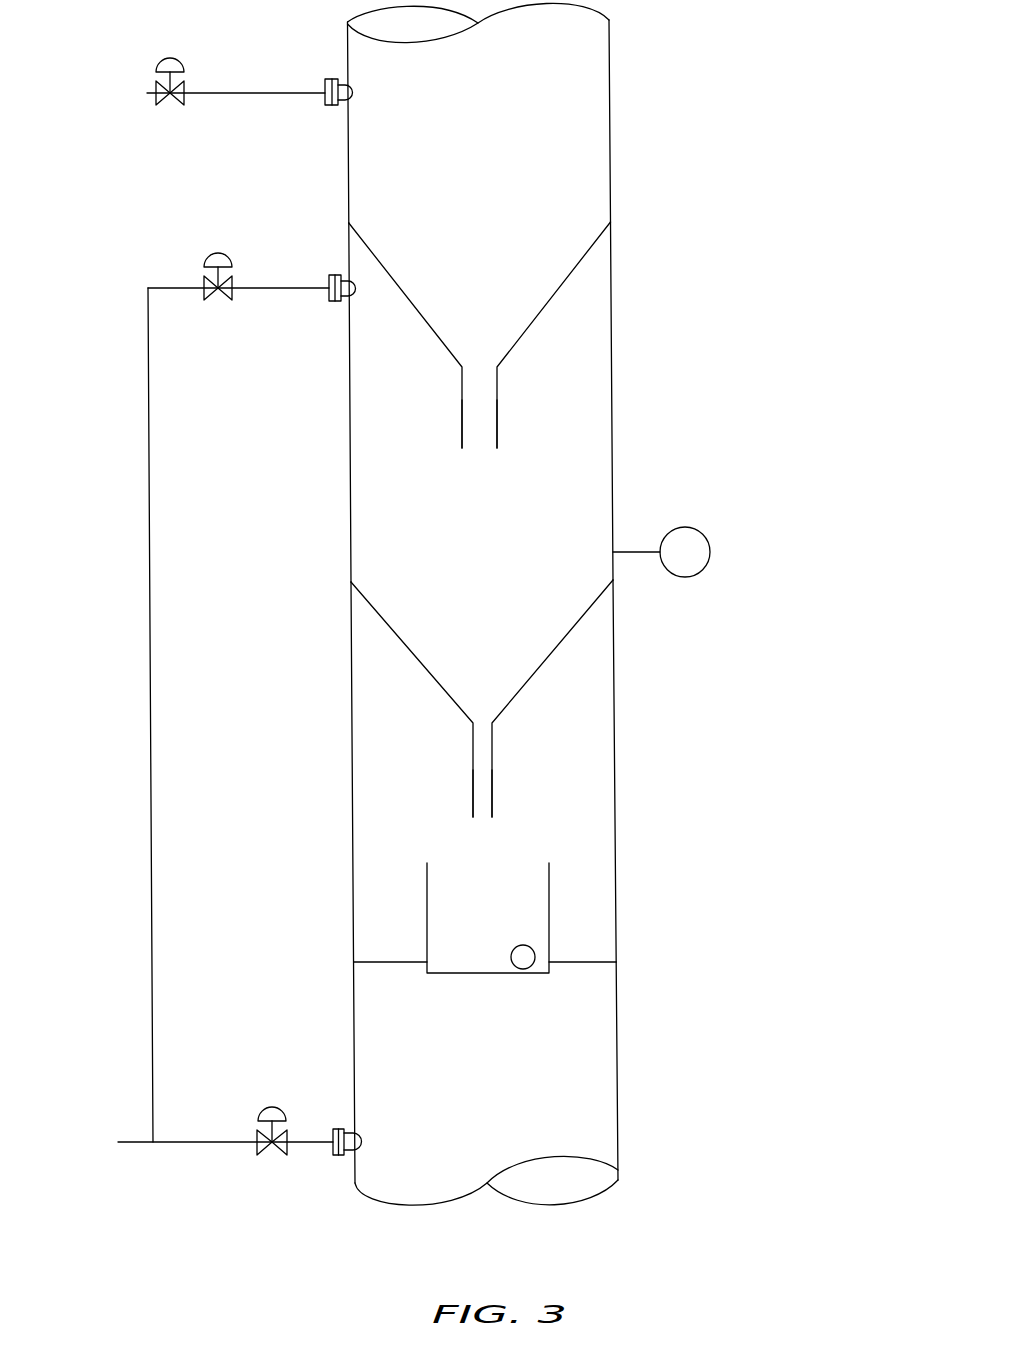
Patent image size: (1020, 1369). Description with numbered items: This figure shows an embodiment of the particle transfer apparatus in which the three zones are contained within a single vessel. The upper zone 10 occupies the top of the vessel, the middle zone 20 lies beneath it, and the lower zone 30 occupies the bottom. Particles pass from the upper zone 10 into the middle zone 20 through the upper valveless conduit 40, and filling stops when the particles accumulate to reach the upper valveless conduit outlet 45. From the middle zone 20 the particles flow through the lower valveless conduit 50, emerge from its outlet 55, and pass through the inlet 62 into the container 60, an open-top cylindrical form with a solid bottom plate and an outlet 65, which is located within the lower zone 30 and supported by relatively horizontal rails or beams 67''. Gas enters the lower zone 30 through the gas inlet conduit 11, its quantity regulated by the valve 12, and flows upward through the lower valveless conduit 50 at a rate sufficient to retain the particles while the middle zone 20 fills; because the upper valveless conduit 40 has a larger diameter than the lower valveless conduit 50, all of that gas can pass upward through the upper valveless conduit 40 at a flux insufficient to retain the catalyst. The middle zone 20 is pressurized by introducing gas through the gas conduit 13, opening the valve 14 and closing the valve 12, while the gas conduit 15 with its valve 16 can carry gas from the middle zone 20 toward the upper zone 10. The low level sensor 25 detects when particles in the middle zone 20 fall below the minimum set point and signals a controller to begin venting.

The upper zone 10 is at (538, 116).
The gas inlet conduit 11 is at (225, 1141).
The valve 12 is at (277, 1106).
The gas conduit 13 is at (312, 287).
The valve 14 is at (224, 256).
The gas conduit 15 is at (293, 92).
The valve 16 is at (167, 58).
The middle zone 20 is at (588, 433).
The low level sensor 25 is at (703, 537).
The lower zone 30 is at (578, 748).
The upper valveless conduit 40 is at (480, 405).
The upper valveless conduit outlet 45 is at (480, 456).
The lower valveless conduit 50 is at (487, 762).
The outlet 55 is at (485, 820).
The container 60 is at (549, 878).
The inlet 62 is at (503, 852).
The outlet 65 is at (522, 955).
The horizontal rails or beams 67'' is at (485, 932).